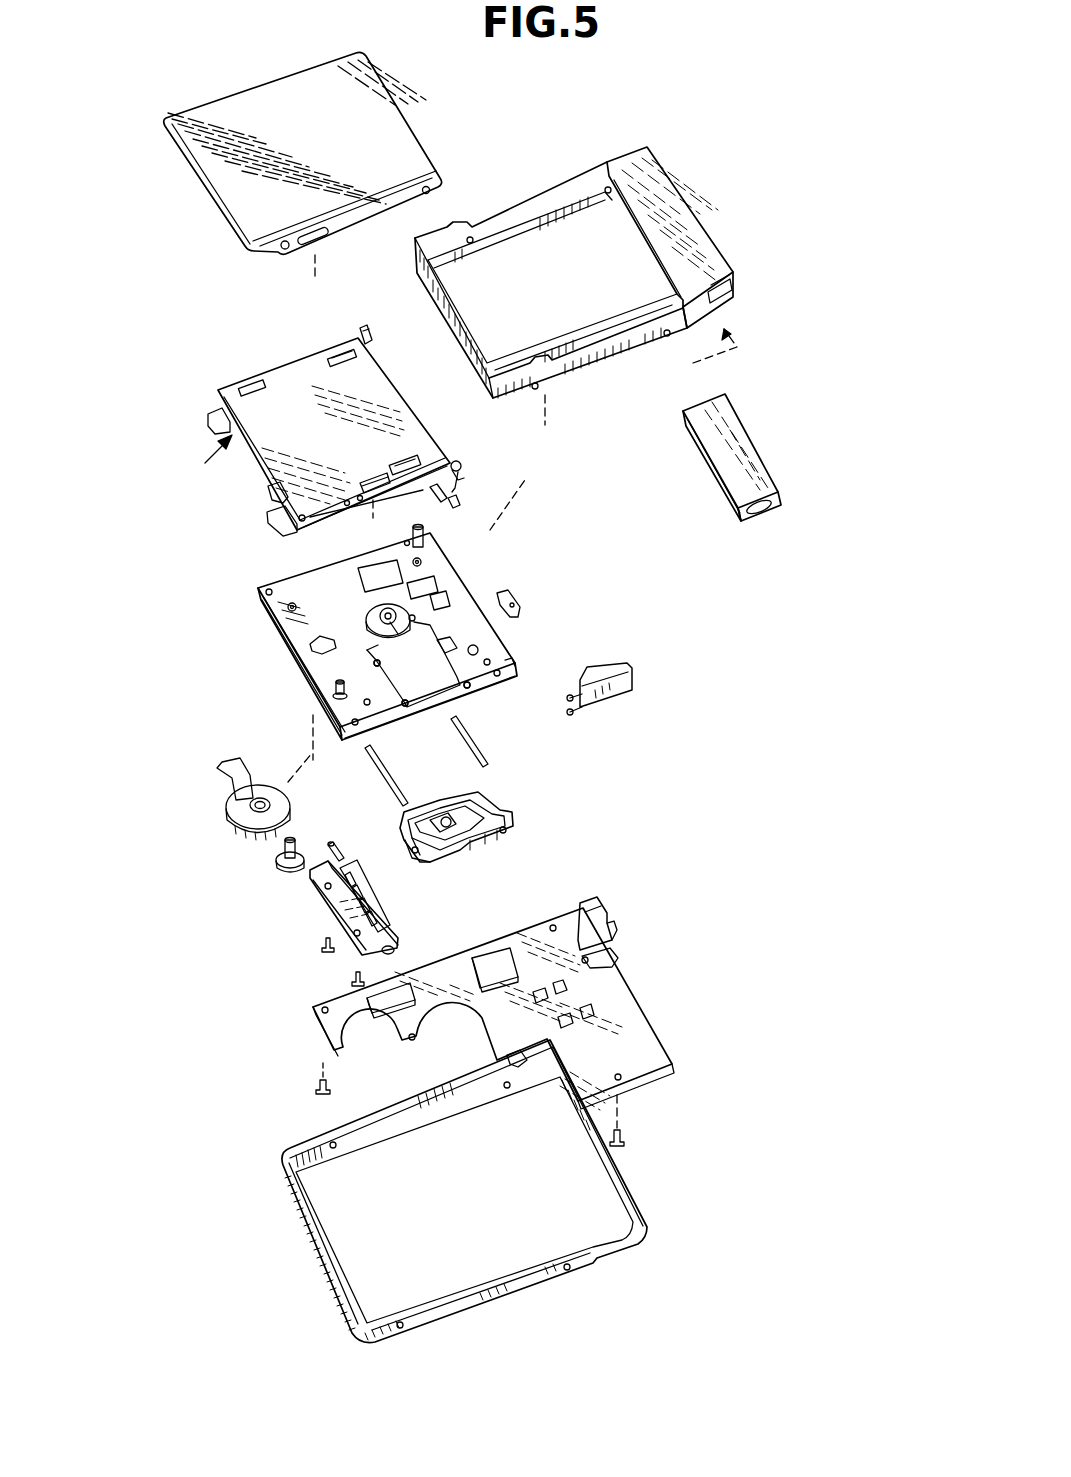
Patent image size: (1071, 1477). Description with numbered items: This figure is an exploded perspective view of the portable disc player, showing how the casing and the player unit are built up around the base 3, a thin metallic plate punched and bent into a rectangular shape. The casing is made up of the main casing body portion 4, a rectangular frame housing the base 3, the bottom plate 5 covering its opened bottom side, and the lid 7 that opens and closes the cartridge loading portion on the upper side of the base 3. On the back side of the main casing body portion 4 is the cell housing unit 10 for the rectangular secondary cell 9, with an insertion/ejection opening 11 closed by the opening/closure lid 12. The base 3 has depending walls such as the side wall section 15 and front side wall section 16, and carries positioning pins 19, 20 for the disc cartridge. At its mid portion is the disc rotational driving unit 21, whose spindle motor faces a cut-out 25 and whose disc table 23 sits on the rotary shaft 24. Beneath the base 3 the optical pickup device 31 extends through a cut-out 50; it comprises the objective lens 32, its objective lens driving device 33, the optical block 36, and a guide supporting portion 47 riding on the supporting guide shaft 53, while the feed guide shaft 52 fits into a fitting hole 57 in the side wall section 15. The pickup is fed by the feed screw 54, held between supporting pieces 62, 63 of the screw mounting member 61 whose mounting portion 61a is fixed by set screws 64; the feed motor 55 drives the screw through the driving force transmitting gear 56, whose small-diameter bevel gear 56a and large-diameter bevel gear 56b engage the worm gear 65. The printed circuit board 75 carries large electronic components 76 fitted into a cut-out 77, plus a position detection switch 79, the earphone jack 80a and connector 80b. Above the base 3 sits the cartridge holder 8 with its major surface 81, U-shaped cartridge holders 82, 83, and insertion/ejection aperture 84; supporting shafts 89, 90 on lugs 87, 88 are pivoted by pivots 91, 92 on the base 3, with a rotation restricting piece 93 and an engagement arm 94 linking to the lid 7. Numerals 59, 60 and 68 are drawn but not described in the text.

The base 3 is at (384, 647).
The main casing body portion 4 is at (598, 269).
The bottom plate 5 is at (315, 1262).
The lid 7 is at (257, 88).
The cartridge holder 8 is at (337, 414).
The secondary cell 9 is at (750, 450).
The cell housing unit 10 is at (683, 203).
The insertion/ejection opening 11 is at (735, 268).
The opening/closure lid 12 is at (612, 706).
The side wall section 15 is at (370, 732).
The front side wall section 16 is at (272, 643).
The positioning pin 19 is at (333, 695).
The positioning pin 20 is at (480, 650).
The disc rotational driving unit 21 is at (372, 619).
The disc table 23 is at (378, 610).
The rotary shaft 24 is at (397, 634).
The cut-out 25 is at (416, 620).
The optical pickup device 31 is at (475, 822).
The objective lens 32 is at (448, 818).
The objective lens driving device 33 is at (417, 852).
The optical block 36 is at (470, 848).
The guide supporting portion 47 is at (507, 829).
The cut-out 50 is at (375, 668).
The feed guide shaft 52 is at (386, 768).
The supporting guide shaft 53 is at (471, 744).
The feed screw 54 is at (378, 906).
The feed motor 55 is at (238, 810).
The driving force transmitting gear 56 is at (259, 879).
The small-diameter bevel gear 56a is at (283, 849).
The large-diameter bevel gear 56b is at (286, 868).
The fitting hole 57 is at (405, 708).
The hole 59 is at (470, 690).
The bracket 60 is at (460, 645).
The screw mounting member 61 is at (357, 902).
The mounting portion 61a is at (346, 935).
The supporting piece 62 is at (345, 863).
The supporting piece 63 is at (393, 947).
The set screw 64 is at (396, 964).
The worm gear 65 is at (331, 850).
The opening 68 is at (316, 650).
The printed circuit board 75 is at (493, 1021).
The electronic component 76 is at (495, 962).
The cut-out 77 is at (378, 571).
The position detection switch 79 is at (505, 1060).
The earphone jack 80a is at (612, 952).
The connector 80b is at (600, 908).
The major surface 81 is at (256, 447).
The cartridge holder 82 is at (391, 496).
The cartridge holder 83 is at (210, 410).
The insertion/ejection aperture 84 is at (206, 461).
The lug 87 is at (461, 463).
The lug 88 is at (372, 342).
The supporting shaft 89 is at (462, 473).
The supporting shaft 90 is at (368, 324).
The pivot 91 is at (516, 605).
The pivot 92 is at (425, 541).
The rotation restricting piece 93 is at (421, 503).
The engagement arm 94 is at (451, 508).